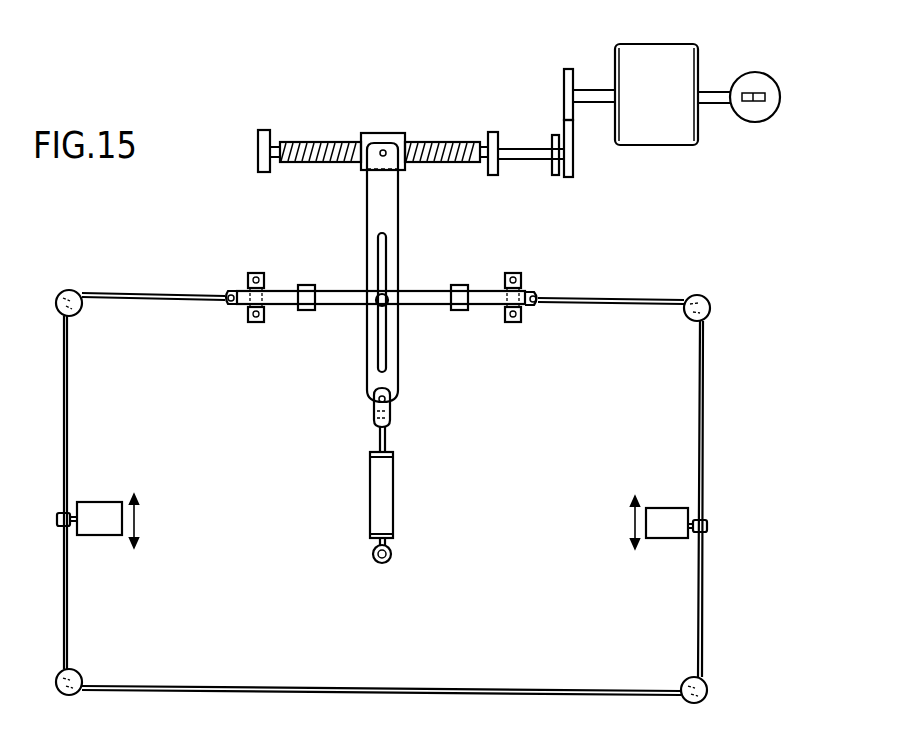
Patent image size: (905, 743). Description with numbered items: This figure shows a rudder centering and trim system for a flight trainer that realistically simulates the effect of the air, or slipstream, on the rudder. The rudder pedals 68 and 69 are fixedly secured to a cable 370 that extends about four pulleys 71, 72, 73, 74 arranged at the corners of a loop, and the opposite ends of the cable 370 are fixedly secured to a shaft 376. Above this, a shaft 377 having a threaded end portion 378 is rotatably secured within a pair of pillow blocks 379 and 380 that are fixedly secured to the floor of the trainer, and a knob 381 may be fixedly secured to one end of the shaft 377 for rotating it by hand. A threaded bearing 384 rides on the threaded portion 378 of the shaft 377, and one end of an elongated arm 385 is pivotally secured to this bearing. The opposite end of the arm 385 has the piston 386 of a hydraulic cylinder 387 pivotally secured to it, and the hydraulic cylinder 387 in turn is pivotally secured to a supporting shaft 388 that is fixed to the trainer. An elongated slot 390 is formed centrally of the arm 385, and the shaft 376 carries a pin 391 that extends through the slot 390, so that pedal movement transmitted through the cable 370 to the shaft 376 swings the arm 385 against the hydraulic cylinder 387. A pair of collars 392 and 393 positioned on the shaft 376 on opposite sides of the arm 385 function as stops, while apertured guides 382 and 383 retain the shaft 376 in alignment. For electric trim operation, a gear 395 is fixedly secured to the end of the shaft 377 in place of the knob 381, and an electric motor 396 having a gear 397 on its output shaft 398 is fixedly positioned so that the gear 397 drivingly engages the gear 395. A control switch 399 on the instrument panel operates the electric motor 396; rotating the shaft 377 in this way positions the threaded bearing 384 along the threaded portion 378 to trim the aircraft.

The rudder pedal 68 is at (112, 472).
The rudder pedal 69 is at (670, 508).
The pulley 71 is at (71, 289).
The pulley 72 is at (70, 695).
The pulley 73 is at (698, 703).
The pulley 74 is at (700, 295).
The cable 370 is at (705, 422).
The shaft 376 is at (355, 275).
The shaft 377 is at (545, 128).
The threaded end portion 378 is at (310, 140).
The pillow block 379 is at (257, 135).
The pillow block 380 is at (488, 132).
The knob 381 is at (553, 170).
The apertured guide 382 is at (248, 282).
The apertured guide 383 is at (521, 282).
The threaded bearing 384 is at (395, 133).
The elongated arm 385 is at (393, 203).
The piston 386 is at (390, 415).
The hydraulic cylinder 387 is at (385, 467).
The supporting shaft 388 is at (392, 558).
The elongated slot 390 is at (383, 248).
The pin 391 is at (378, 303).
The collar 392 is at (310, 312).
The collar 393 is at (459, 312).
The gear 395 is at (572, 165).
The electric motor 396 is at (670, 135).
The gear 397 is at (565, 83).
The output shaft 398 is at (593, 90).
The control switch 399 is at (793, 52).